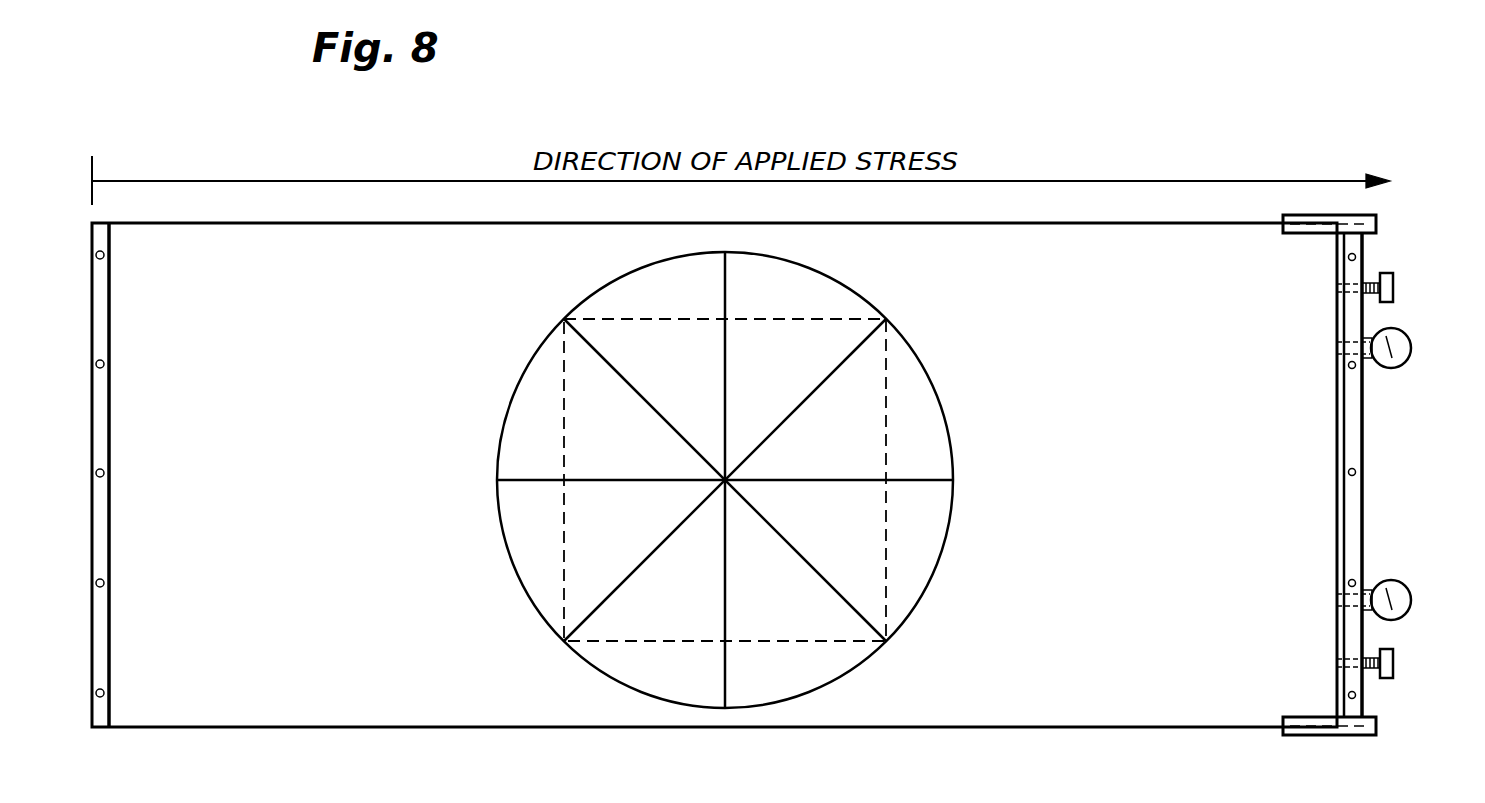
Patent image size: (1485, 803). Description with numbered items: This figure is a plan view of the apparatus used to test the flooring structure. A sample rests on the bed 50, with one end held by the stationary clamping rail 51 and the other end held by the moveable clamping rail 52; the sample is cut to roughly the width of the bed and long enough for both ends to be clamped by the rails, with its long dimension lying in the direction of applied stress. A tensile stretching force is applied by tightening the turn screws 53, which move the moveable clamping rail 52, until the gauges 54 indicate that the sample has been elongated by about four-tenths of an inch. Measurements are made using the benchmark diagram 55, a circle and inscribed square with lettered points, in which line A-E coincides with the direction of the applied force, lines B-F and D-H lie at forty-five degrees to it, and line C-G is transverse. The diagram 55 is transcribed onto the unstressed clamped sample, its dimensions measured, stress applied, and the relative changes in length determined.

The bed 50 is at (412, 697).
The stationary clamping rail 51 is at (105, 530).
The moveable clamping rail 52 is at (1355, 503).
The turn screws 53 is at (1390, 275).
The gauges 54 is at (1404, 352).
The benchmark diagram 55 is at (970, 567).